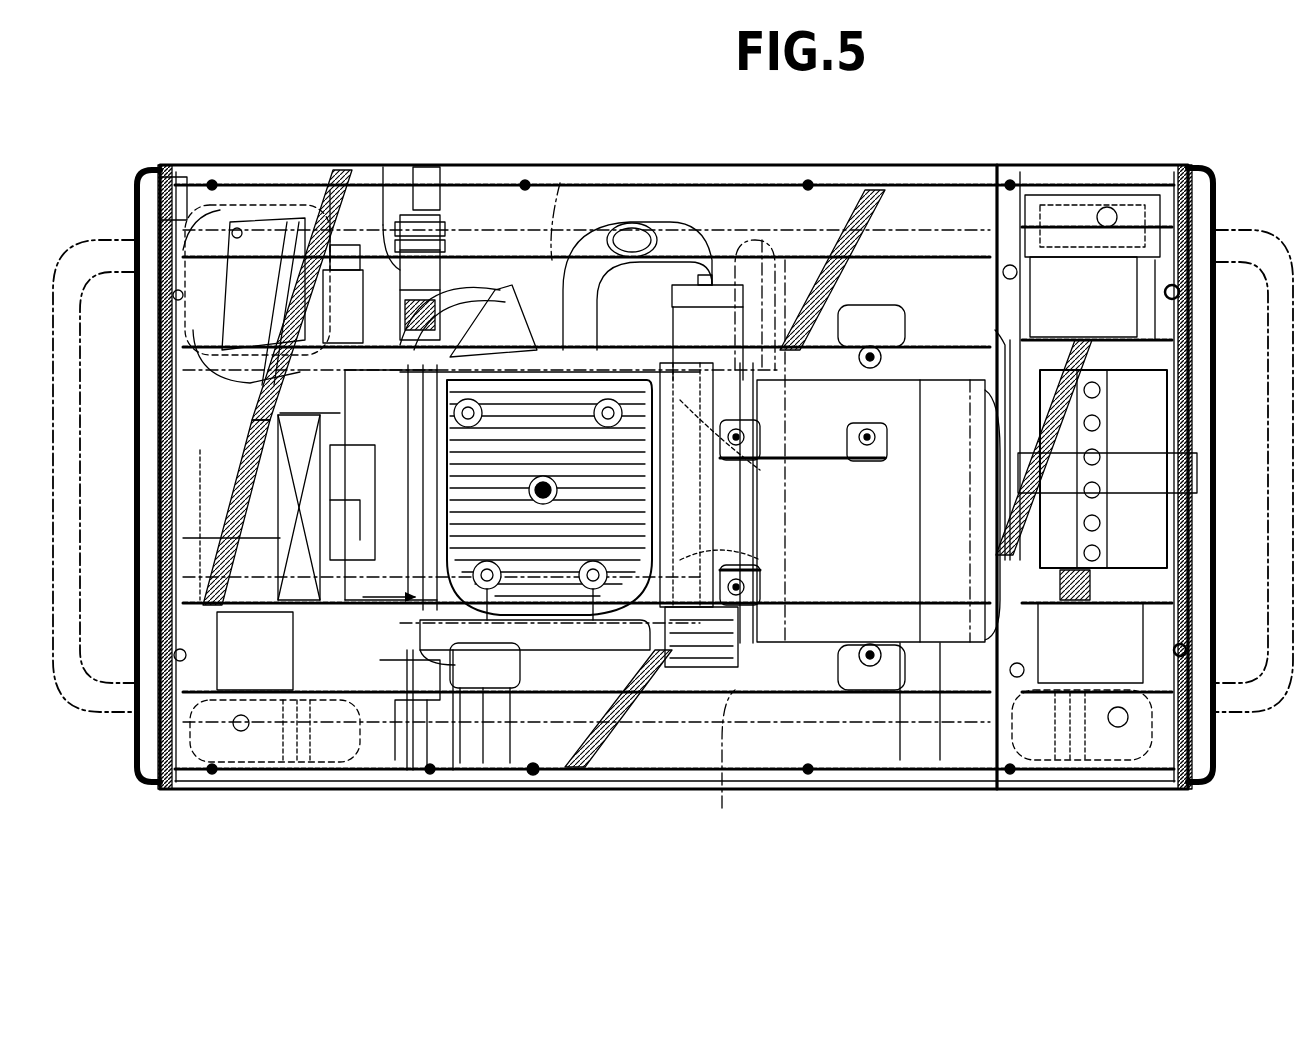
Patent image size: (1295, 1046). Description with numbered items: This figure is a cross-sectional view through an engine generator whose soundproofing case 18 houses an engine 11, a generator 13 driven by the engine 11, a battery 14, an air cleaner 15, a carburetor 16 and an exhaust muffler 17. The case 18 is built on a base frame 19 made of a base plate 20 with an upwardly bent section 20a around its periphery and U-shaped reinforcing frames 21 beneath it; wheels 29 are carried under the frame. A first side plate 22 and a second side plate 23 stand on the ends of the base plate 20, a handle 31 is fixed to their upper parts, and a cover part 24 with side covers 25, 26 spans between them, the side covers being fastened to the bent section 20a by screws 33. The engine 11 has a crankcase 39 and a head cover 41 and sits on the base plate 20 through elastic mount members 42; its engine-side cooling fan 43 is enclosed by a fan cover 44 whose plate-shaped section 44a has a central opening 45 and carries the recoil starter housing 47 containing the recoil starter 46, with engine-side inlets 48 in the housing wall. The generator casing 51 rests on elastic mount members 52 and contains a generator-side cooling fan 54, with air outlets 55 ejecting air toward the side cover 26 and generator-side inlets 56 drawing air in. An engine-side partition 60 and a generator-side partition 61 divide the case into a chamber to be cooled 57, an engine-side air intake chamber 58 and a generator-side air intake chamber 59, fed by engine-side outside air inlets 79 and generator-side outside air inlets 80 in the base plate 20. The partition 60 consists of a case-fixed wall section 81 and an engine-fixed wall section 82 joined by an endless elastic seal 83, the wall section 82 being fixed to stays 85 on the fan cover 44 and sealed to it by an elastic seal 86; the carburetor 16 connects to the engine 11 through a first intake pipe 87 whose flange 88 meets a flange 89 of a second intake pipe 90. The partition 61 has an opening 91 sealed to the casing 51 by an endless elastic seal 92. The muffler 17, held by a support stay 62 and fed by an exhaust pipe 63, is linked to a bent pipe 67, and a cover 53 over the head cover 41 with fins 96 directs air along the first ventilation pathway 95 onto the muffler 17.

The engine 11 is at (608, 652).
The generator 13 is at (760, 650).
The battery 14 is at (1145, 520).
The air cleaner 15 is at (237, 360).
The carburetor 16 is at (392, 215).
The exhaust muffler 17 is at (878, 268).
The soundproofing case 18 is at (656, 163).
The base frame 19 is at (673, 791).
The base plate 20 is at (200, 538).
The bent section 20a is at (478, 770).
The reinforcing frame 21 is at (639, 477).
The first side plate 22 is at (138, 452).
The second side plate 23 is at (1218, 470).
The cover part 24 is at (870, 791).
The side cover 25 is at (812, 789).
The side cover 26 is at (943, 163).
The wheel 29 is at (345, 183).
The handle 31 is at (90, 255).
The screw 33 is at (808, 183).
The crankcase 39 is at (587, 640).
The head cover 41 is at (425, 600).
The elastic mount member 42 is at (477, 683).
The engine-side cooling fan 43 is at (372, 420).
The fan cover 44 is at (365, 710).
The plate-shaped section 44a is at (310, 343).
The opening 45 is at (357, 655).
The recoil starter 46 is at (285, 485).
The recoil starter housing 47 is at (273, 520).
The engine-side inlet 48 is at (335, 355).
The casing 51 is at (938, 640).
The elastic mount member 52 is at (875, 333).
The cover 53 is at (515, 325).
The generator-side cooling fan 54 is at (690, 462).
The air outlet 55 is at (700, 667).
The generator-side inlet 56 is at (1043, 470).
The chamber to be cooled 57 is at (669, 301).
The engine-side air intake chamber 58 is at (210, 525).
The generator-side air intake chamber 59 is at (1082, 665).
The engine-side partition 60 is at (445, 250).
The generator-side partition 61 is at (1035, 230).
The support stay 62 is at (765, 565).
The exhaust pipe 63 is at (592, 245).
The pipe 67 is at (777, 413).
The engine-side outside air inlet 79 is at (333, 335).
The generator-side outside air inlet 80 is at (1177, 275).
The case-fixed wall section 81 is at (445, 210).
The engine-fixed wall section 82 is at (385, 690).
The endless elastic seal 83 is at (410, 770).
The stay 85 is at (453, 663).
The elastic seal 86 is at (402, 677).
The first intake pipe 87 is at (345, 245).
The flange 88 is at (445, 229).
The flange 89 is at (445, 246).
The second intake pipe 90 is at (470, 292).
The opening 91 is at (1018, 390).
The endless elastic seal 92 is at (1000, 350).
The first ventilation pathway 95 is at (380, 405).
The fin 96 is at (585, 592).